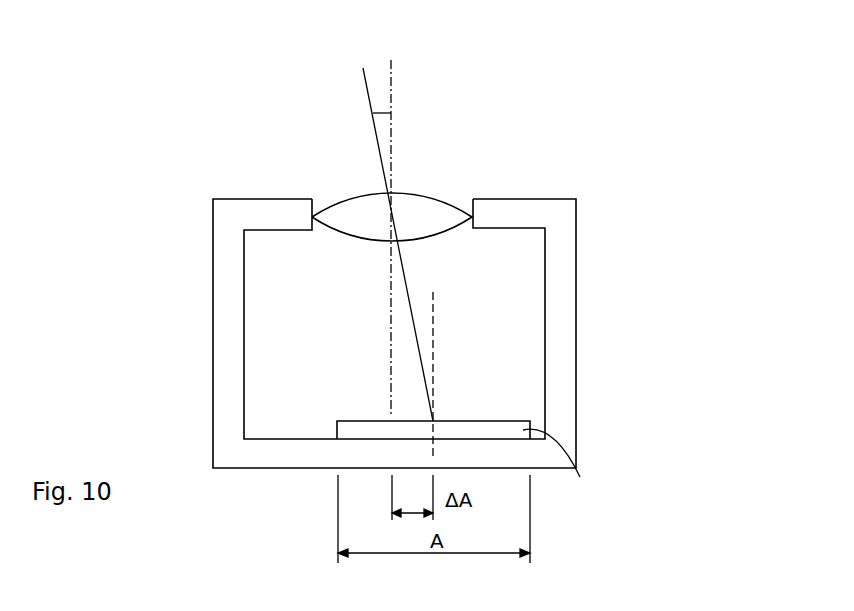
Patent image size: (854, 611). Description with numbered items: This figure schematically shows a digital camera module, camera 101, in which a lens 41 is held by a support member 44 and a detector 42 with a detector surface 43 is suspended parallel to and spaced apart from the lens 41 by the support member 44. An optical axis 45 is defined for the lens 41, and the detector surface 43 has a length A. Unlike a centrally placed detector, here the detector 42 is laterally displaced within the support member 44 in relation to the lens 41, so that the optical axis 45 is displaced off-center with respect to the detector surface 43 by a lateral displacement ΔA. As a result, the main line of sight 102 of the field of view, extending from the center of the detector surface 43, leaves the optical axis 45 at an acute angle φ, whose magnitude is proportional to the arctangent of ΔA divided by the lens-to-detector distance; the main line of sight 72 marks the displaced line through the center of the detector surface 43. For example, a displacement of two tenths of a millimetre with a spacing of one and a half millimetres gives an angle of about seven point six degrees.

The lens 41 is at (415, 207).
The detector 42 is at (563, 473).
The detector surface 43 is at (479, 418).
The support member 44 is at (225, 290).
The optical axis 45 is at (390, 100).
The main line of sight 72 is at (413, 373).
The camera 101 is at (632, 348).
The main line of sight 102 is at (375, 140).